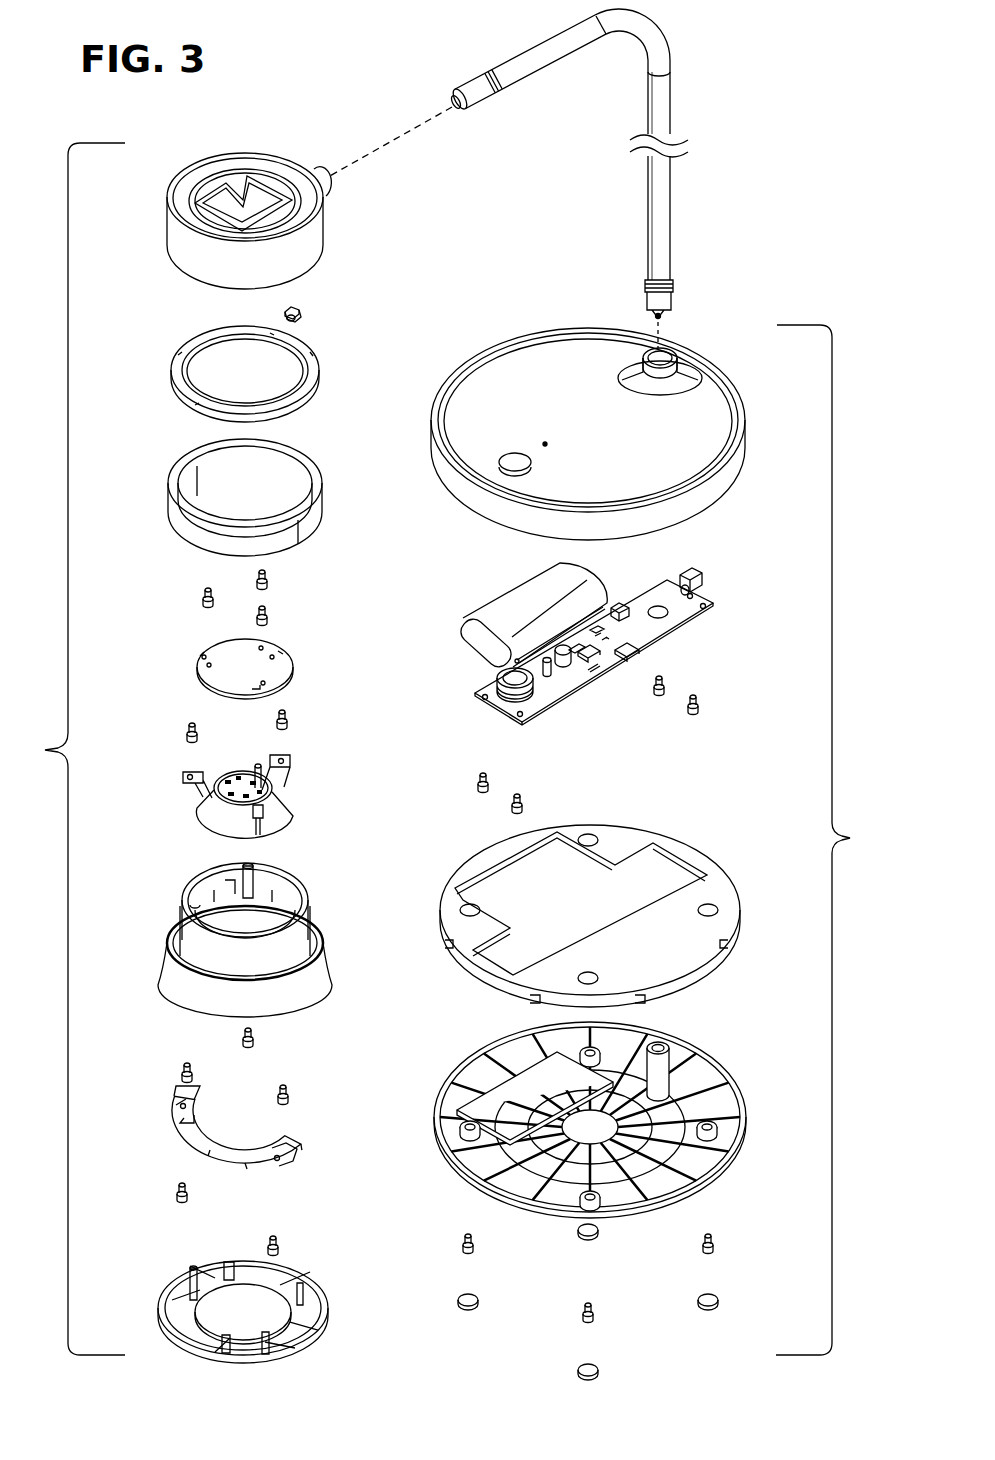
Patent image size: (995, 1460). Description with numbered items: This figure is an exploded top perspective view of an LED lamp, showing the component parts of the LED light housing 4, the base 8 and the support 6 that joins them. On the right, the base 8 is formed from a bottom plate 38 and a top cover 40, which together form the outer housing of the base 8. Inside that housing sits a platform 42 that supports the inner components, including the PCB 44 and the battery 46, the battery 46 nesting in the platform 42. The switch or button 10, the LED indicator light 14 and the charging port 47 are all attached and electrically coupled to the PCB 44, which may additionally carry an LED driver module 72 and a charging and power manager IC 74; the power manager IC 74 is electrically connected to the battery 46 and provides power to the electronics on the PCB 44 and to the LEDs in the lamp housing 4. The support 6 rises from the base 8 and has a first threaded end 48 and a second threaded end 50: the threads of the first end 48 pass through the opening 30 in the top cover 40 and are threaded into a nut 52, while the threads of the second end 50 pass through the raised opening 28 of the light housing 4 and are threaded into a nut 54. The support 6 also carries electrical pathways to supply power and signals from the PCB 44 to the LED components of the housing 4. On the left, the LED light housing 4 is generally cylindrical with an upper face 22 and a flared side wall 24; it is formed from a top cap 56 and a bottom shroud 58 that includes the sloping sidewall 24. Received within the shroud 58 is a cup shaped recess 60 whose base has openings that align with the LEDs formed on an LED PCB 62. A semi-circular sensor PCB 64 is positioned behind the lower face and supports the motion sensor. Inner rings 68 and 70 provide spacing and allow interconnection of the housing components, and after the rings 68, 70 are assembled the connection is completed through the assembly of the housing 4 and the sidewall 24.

The LED light housing 4 is at (73, 749).
The support 6 is at (664, 102).
The base 8 is at (826, 840).
The switch or button 10 is at (500, 672).
The LED indicator light 14 is at (550, 672).
The upper face 22 is at (227, 175).
The flared side wall 24 is at (172, 972).
The raised opening 28 is at (307, 165).
The opening 30 is at (680, 355).
The bottom plate 38 is at (730, 1090).
The top cover 40 is at (748, 412).
The platform 42 is at (707, 885).
The PCB 44 is at (672, 618).
The battery 46 is at (493, 612).
The charging port 47 is at (703, 580).
The first threaded end 48 is at (672, 315).
The second threaded end 50 is at (452, 97).
The nut 52 is at (672, 1048).
The nut 54 is at (300, 312).
The top cap 56 is at (172, 247).
The bottom shroud 58 is at (188, 883).
The cup shaped recess 60 is at (200, 808).
The LED PCB 62 is at (220, 648).
The semi-circular sensor PCB 64 is at (178, 1122).
The inner ring 68 is at (178, 462).
The inner ring 70 is at (180, 350).
The LED driver module 72 is at (598, 660).
The charging and power manager IC 74 is at (630, 652).